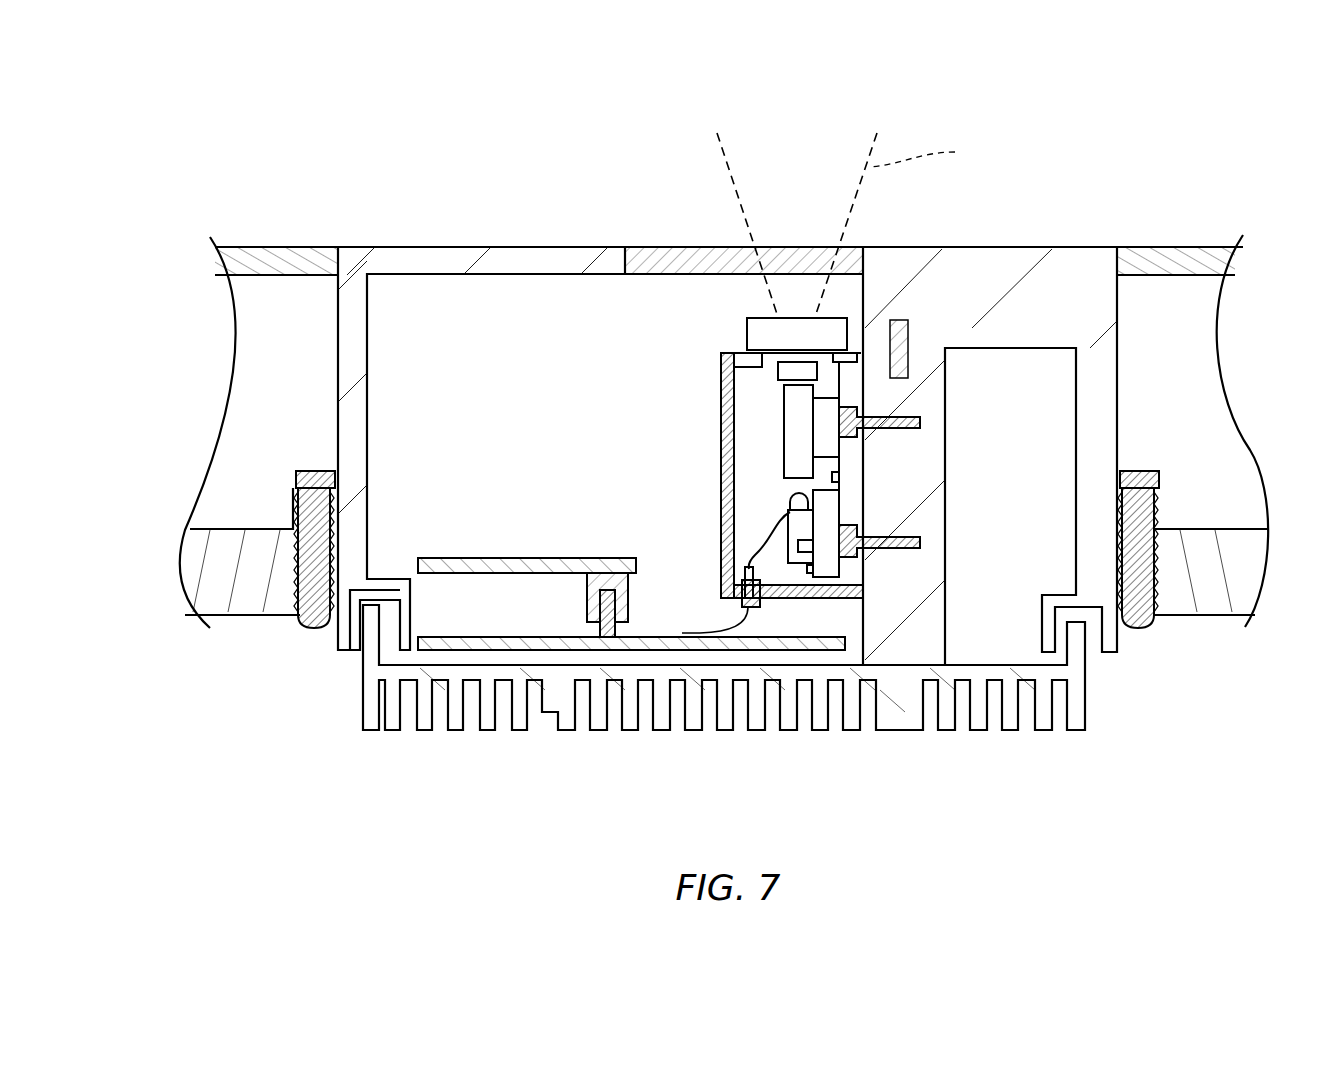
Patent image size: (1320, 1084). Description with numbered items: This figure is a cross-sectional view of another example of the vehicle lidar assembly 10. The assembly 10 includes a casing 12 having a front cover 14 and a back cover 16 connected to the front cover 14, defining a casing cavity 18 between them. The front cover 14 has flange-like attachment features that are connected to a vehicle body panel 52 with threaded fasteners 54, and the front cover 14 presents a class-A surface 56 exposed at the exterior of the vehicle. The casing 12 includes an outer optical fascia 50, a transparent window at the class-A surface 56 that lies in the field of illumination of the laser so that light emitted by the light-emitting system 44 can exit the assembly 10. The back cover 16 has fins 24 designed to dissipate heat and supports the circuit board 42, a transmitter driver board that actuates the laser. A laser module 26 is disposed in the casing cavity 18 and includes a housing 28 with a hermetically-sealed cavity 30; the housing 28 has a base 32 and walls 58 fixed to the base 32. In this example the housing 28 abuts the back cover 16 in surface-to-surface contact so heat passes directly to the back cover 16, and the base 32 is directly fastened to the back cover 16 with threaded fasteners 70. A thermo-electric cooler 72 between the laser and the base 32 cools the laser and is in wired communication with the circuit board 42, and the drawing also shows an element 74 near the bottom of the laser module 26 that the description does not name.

The vehicle lidar assembly 10 is at (1106, 173).
The casing 12 is at (391, 237).
The front cover 14 is at (578, 258).
The back cover 16 is at (355, 663).
The casing cavity 18 is at (465, 350).
The fins 24 is at (695, 732).
The laser module 26 is at (712, 452).
The housing 28 is at (720, 500).
The hermetically-sealed cavity 30 is at (750, 423).
The base 32 is at (853, 468).
The circuit board 42 is at (512, 637).
The light-emitting system 44 is at (707, 323).
The outer optical fascia 50 is at (693, 247).
The vehicle body panel 52 is at (262, 527).
The threaded fasteners 54 is at (312, 471).
The class-A surface 56 is at (518, 247).
The walls 58 is at (736, 354).
The threaded fasteners 70 is at (925, 425).
The thermo-electric cooler 72 is at (830, 508).
The wire connector 74 is at (762, 602).